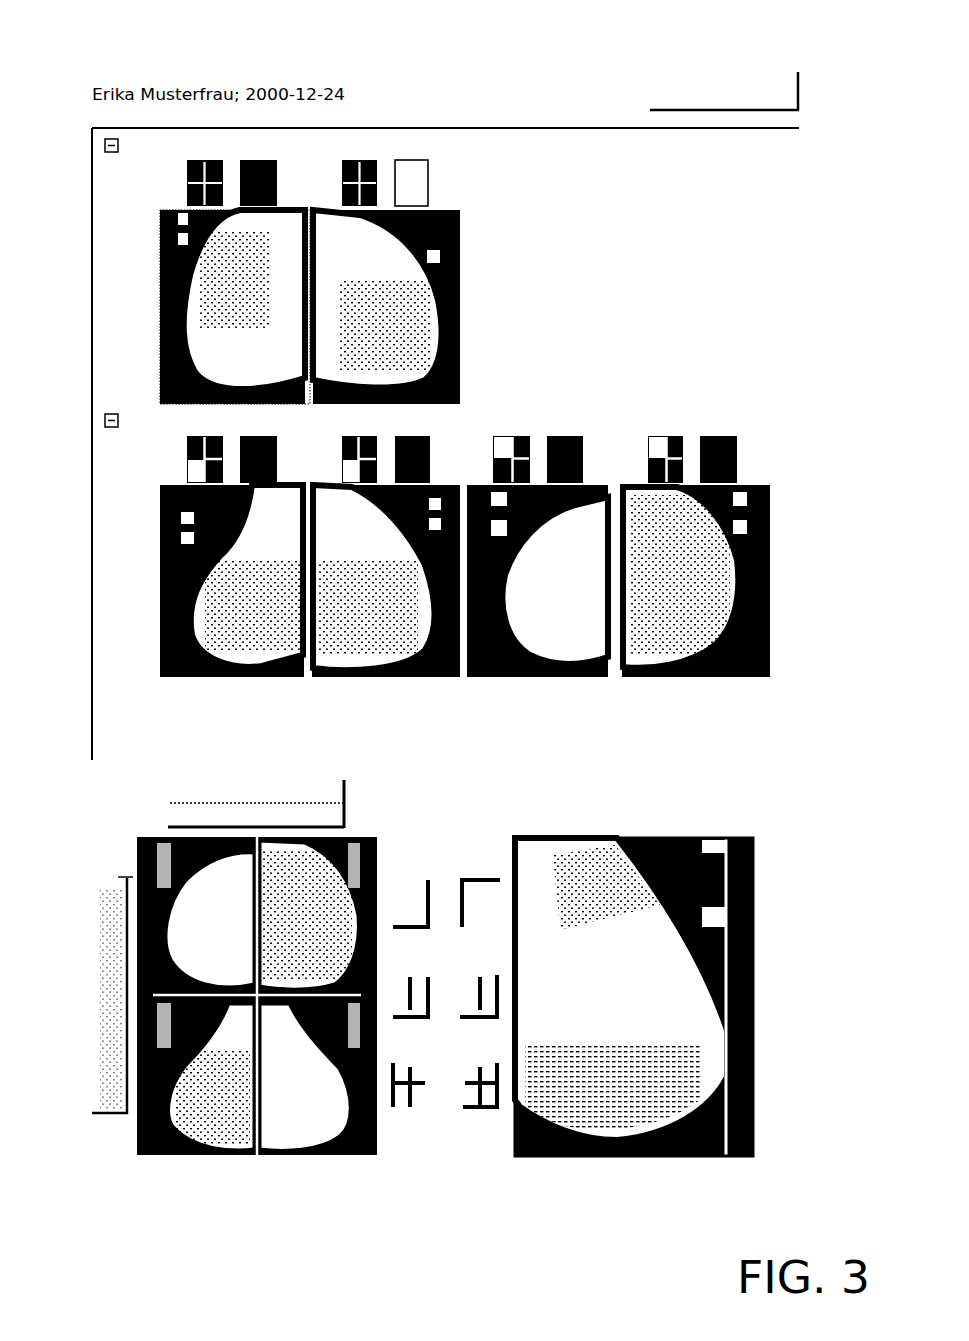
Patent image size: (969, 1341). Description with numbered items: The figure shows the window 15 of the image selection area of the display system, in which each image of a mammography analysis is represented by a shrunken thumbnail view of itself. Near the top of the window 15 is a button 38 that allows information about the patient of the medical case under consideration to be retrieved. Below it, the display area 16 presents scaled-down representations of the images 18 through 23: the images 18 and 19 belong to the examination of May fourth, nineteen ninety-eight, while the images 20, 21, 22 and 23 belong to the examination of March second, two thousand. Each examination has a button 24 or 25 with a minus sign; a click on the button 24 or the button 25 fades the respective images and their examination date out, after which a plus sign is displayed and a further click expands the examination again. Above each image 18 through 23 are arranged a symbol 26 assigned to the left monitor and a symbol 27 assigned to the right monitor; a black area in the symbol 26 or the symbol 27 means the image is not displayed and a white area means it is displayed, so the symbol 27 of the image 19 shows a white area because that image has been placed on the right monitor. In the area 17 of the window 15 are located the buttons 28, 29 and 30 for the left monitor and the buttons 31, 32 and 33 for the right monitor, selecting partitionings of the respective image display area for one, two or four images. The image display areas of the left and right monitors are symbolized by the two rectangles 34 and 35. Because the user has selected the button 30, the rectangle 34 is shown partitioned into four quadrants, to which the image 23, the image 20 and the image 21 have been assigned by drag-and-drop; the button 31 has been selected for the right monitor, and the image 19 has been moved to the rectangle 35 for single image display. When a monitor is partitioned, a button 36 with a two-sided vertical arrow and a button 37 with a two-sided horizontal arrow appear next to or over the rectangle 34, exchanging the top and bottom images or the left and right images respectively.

The window 15 is at (823, 348).
The display area 16 is at (597, 258).
The area 17 is at (492, 814).
The image 18 is at (157, 323).
The image 19 is at (459, 316).
The image 20 is at (220, 677).
The image 21 is at (350, 677).
The image 22 is at (513, 677).
The image 23 is at (650, 677).
The button 24 is at (104, 145).
The button 25 is at (104, 421).
The symbol 26 is at (504, 432).
The symbol 27 is at (431, 190).
The button 28 is at (400, 930).
The button 29 is at (400, 1020).
The button 30 is at (400, 1110).
The button 31 is at (470, 930).
The button 32 is at (470, 1020).
The button 33 is at (470, 1110).
The rectangle 34 is at (277, 1155).
The rectangle 35 is at (600, 1156).
The button 36 is at (87, 995).
The button 37 is at (160, 803).
The button 38 is at (673, 70).